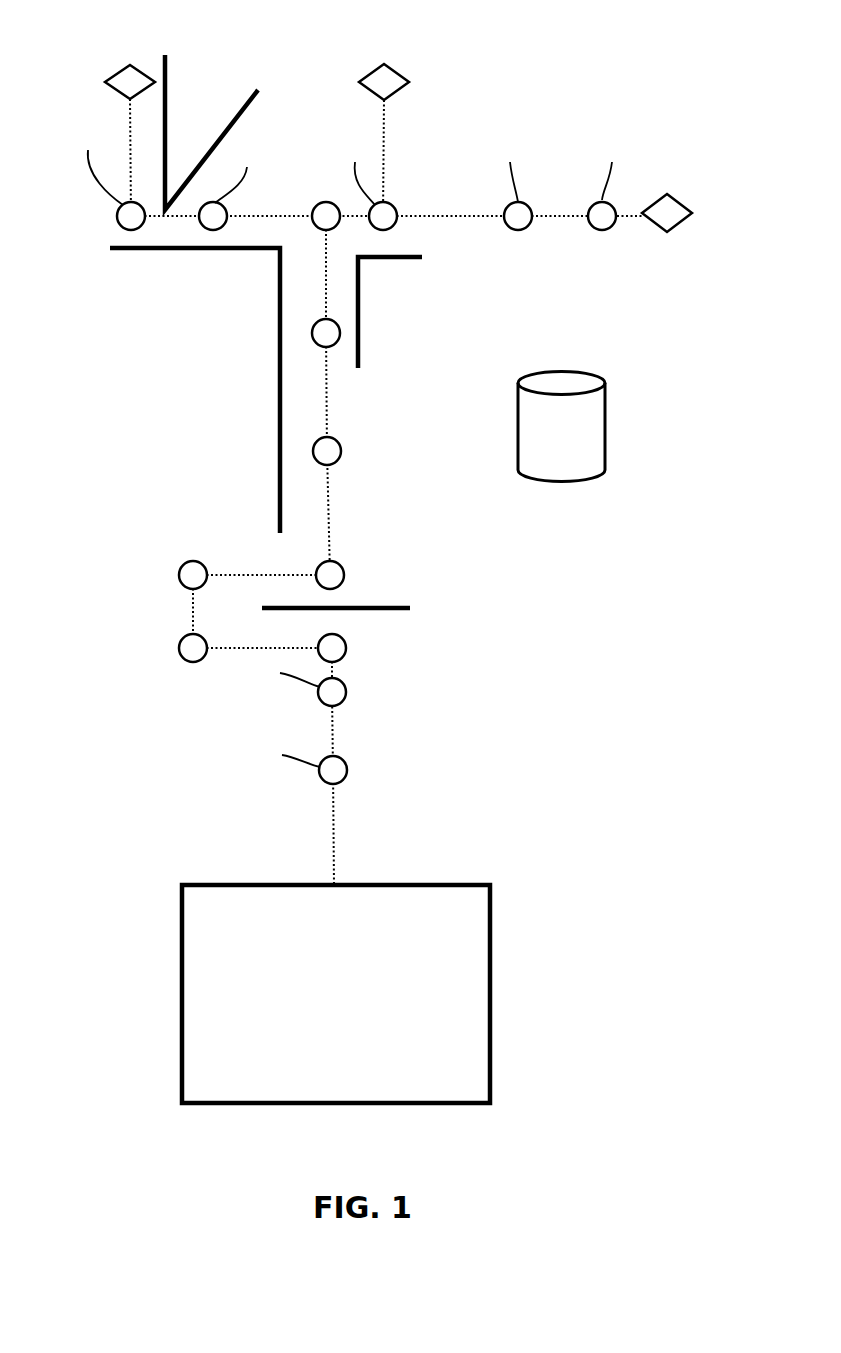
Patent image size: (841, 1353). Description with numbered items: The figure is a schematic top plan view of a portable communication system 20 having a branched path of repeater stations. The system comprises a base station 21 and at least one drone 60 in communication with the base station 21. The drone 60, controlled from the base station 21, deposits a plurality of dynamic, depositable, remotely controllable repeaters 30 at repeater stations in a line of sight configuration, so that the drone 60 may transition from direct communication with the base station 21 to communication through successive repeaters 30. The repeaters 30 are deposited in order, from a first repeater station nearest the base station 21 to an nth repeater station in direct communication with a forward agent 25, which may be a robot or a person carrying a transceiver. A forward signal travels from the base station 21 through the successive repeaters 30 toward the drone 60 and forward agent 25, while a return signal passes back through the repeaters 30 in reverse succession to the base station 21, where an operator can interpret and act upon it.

The communication system 20 is at (487, 567).
The base station 21 is at (182, 952).
The forward agent 25 is at (108, 73).
The repeater 30 is at (117, 212).
The drone 60 is at (605, 418).